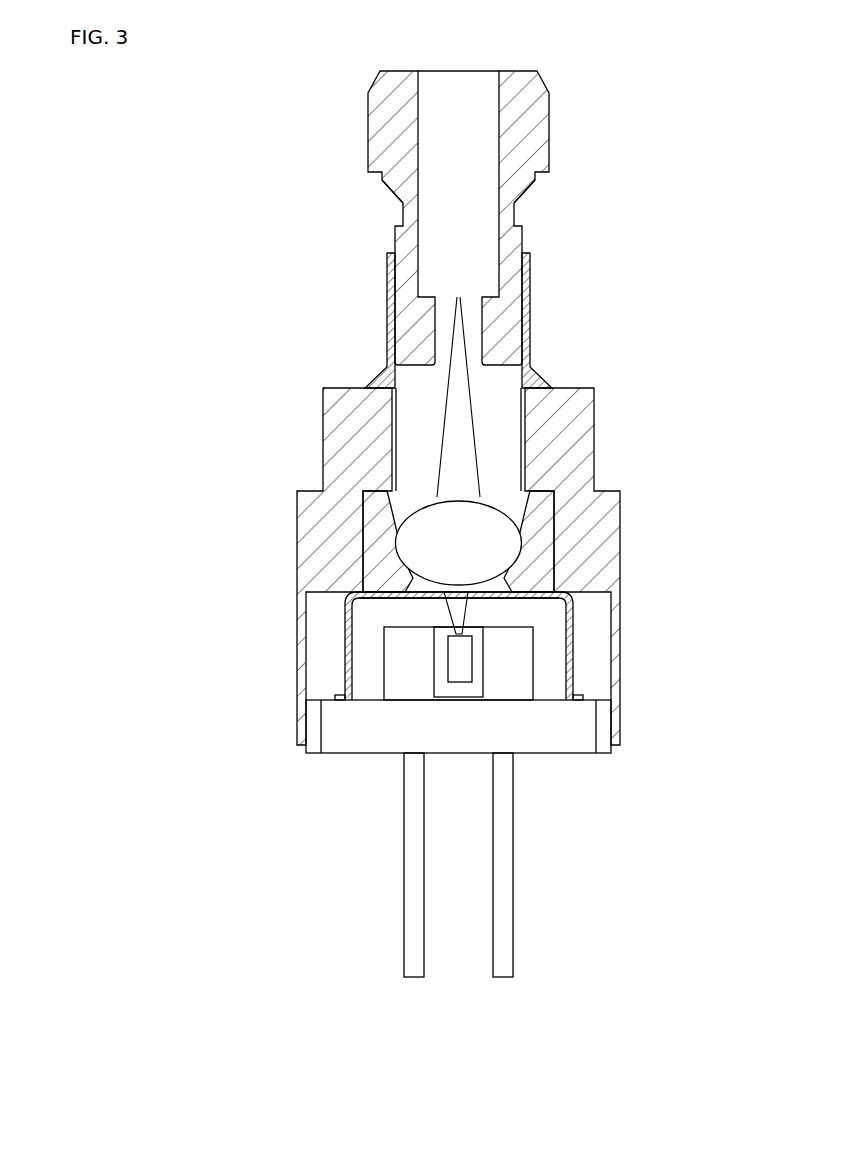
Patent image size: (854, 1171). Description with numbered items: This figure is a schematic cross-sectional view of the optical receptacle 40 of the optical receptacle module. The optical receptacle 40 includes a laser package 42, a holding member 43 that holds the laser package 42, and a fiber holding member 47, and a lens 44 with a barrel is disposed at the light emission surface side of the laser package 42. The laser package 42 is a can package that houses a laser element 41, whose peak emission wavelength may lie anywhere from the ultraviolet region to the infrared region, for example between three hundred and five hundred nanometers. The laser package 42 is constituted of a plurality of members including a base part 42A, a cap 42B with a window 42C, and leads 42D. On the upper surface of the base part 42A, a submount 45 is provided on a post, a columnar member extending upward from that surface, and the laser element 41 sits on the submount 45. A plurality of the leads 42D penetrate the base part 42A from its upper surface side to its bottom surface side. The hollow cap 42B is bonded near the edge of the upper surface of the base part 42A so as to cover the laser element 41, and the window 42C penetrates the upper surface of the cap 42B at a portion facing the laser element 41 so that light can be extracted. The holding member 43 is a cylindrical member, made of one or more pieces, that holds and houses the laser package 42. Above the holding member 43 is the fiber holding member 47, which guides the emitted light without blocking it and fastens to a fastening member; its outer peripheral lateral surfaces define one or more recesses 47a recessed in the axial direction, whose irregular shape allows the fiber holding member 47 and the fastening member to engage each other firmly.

The optical receptacle 40 is at (632, 336).
The laser element 41 is at (463, 645).
The laser package 42 is at (204, 550).
The base part 42A is at (348, 720).
The cap 42B is at (347, 623).
The window 42C is at (445, 614).
The leads 42D is at (418, 830).
The holding member 43 is at (348, 442).
The lens 44 is at (540, 537).
The submount 45 is at (482, 658).
The fiber holding member 47 is at (412, 332).
The recess 47a is at (372, 205).